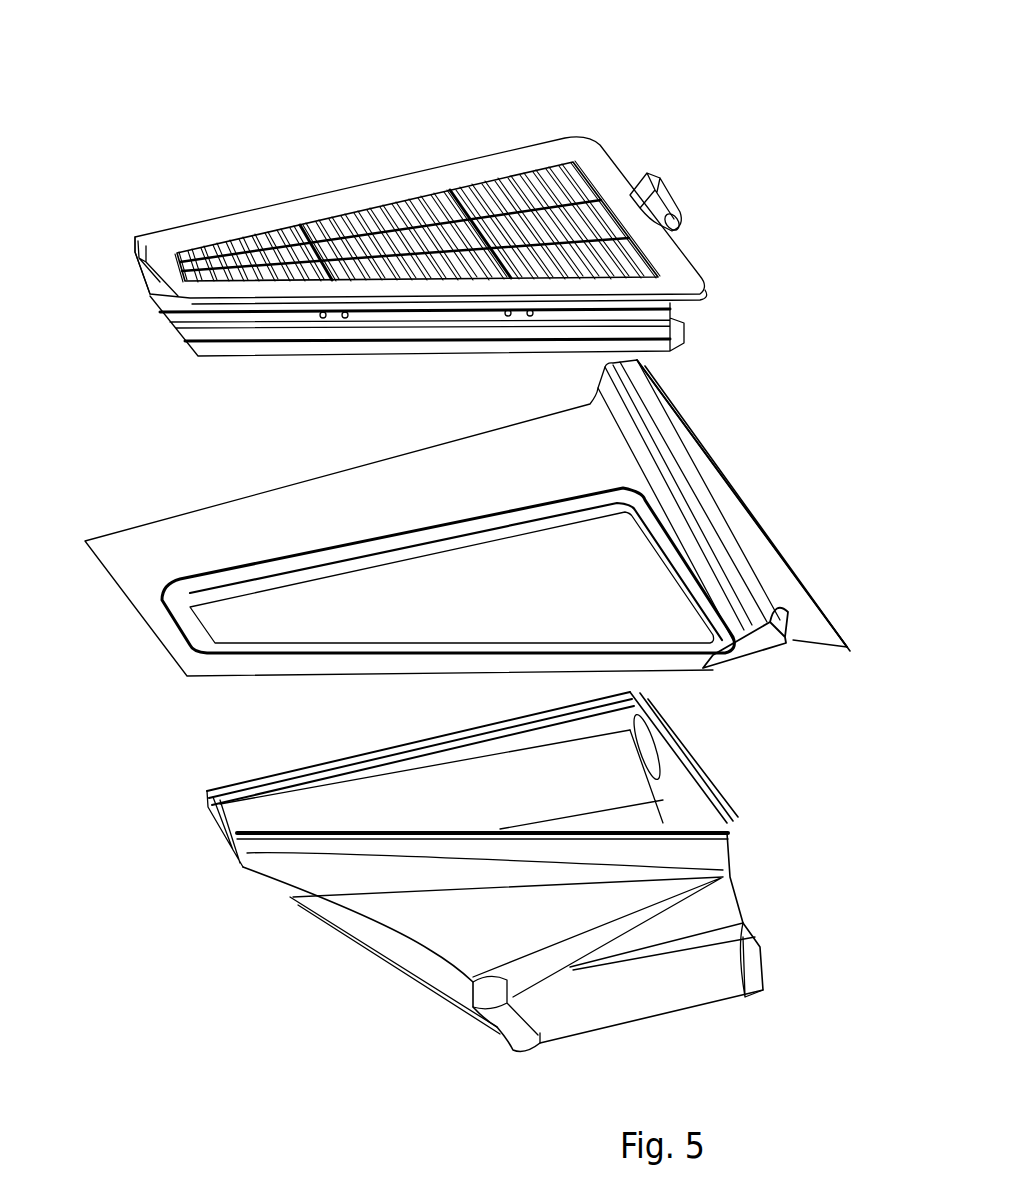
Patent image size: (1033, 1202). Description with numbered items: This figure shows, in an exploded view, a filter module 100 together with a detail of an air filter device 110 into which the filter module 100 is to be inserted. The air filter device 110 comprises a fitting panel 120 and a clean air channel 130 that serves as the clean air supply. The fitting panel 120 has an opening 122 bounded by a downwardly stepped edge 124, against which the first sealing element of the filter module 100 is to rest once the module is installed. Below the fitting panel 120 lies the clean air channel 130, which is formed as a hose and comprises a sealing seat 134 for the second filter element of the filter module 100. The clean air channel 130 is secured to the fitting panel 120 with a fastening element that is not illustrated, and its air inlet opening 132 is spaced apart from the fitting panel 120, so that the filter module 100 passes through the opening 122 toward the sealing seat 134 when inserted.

The air filter device 110 is at (133, 129).
The filter module 100 is at (290, 198).
The fitting panel 120 is at (203, 560).
The opening 122 is at (472, 606).
The downwardly stepped edge 124 is at (592, 643).
The clean air channel 130 is at (215, 828).
The air inlet opening 132 is at (547, 811).
The sealing seat 134 is at (292, 770).